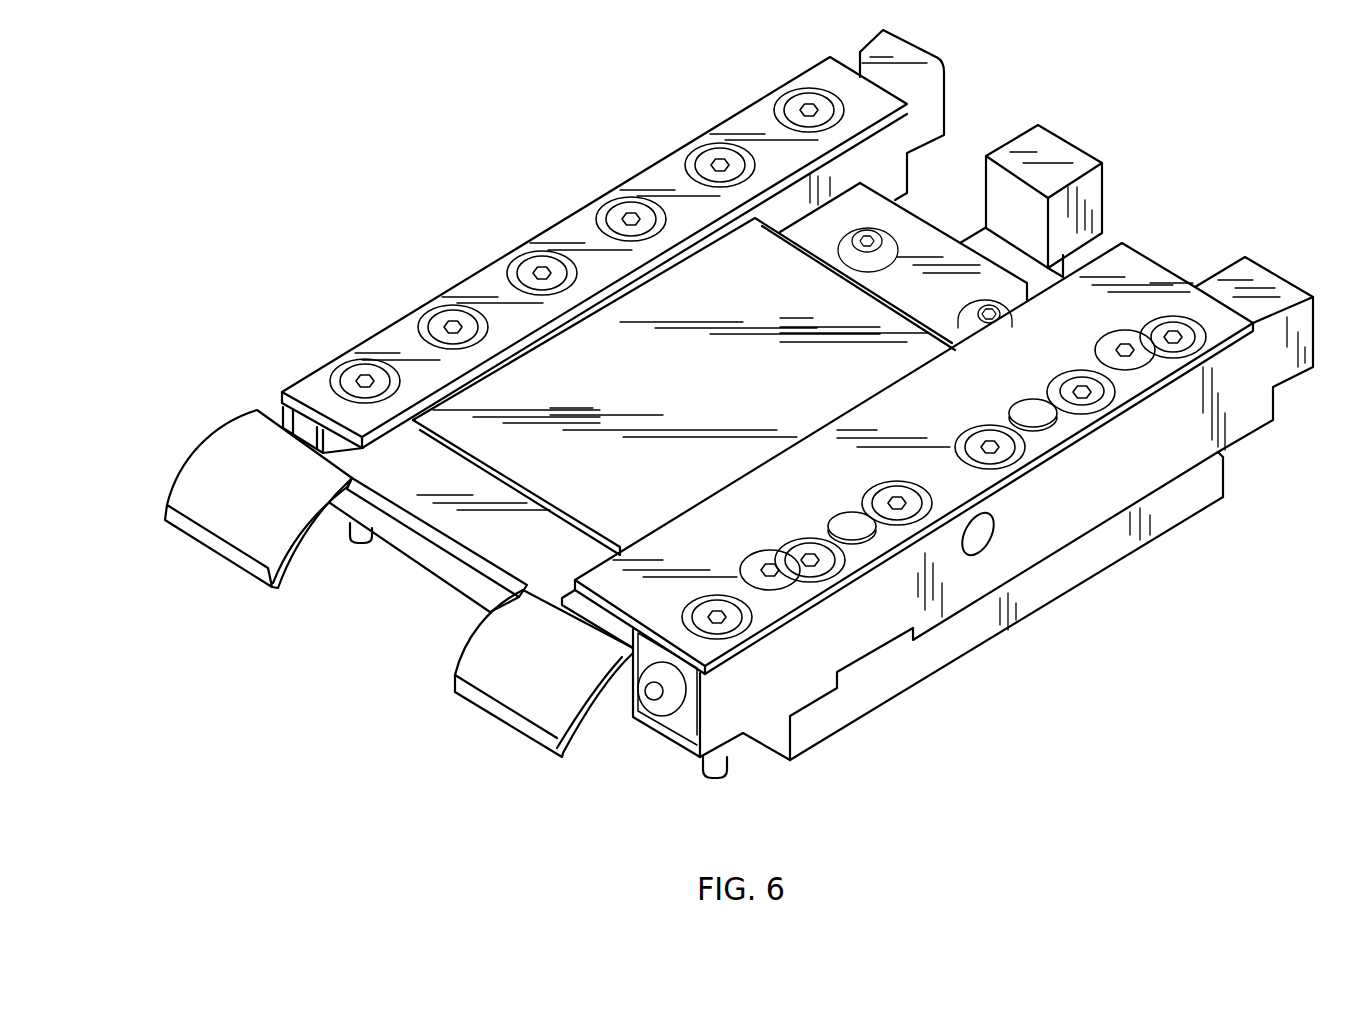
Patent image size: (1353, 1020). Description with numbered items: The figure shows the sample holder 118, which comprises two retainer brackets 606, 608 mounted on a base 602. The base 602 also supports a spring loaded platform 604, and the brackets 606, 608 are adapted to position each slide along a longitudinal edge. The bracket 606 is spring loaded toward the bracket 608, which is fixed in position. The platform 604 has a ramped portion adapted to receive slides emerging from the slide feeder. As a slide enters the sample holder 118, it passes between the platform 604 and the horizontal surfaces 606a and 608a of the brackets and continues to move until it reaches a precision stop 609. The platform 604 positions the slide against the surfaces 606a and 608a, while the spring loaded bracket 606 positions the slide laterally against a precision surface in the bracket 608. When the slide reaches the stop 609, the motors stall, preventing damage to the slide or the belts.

The sample holder 118 is at (418, 214).
The base 602 is at (915, 662).
The spring loaded platform 604 is at (720, 270).
The retainer bracket 606 is at (410, 355).
The horizontal surface 606a is at (433, 415).
The retainer bracket 608 is at (960, 487).
The horizontal surface 608a is at (625, 643).
The precision stop 609 is at (1083, 163).